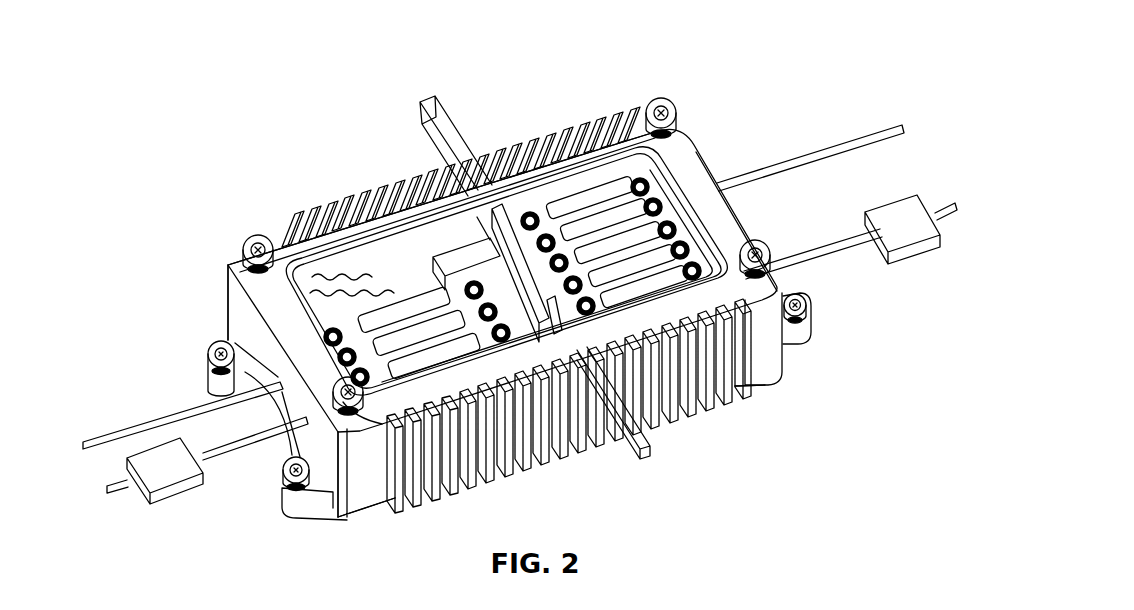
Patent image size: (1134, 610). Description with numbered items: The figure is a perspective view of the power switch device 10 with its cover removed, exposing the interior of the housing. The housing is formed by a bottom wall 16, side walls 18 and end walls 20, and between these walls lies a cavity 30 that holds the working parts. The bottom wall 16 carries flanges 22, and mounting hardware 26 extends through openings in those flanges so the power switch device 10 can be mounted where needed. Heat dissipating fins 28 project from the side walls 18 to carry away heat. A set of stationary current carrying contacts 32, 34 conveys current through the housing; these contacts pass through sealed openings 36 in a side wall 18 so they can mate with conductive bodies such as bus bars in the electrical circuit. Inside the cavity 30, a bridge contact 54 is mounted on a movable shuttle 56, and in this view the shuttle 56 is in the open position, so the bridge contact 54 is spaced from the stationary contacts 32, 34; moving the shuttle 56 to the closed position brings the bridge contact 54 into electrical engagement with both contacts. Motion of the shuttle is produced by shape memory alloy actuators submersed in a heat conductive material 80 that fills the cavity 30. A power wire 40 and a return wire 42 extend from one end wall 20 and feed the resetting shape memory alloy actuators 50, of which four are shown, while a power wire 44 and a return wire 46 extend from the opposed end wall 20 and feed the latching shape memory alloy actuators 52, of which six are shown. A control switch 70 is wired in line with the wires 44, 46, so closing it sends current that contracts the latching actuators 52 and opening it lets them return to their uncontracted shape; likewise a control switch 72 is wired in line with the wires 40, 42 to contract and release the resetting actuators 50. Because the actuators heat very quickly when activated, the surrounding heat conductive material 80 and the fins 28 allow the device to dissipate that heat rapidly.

The power switch device 10 is at (712, 40).
The bottom wall 16 is at (603, 422).
The side walls 18 is at (357, 246).
The end walls 20 is at (731, 233).
The flanges 22 is at (212, 385).
The mounting hardware 26 is at (287, 483).
The heat dissipating fins 28 is at (323, 215).
The cavity 30 is at (393, 260).
The stationary current carrying contact 32 is at (436, 101).
The stationary current carrying contact 34 is at (650, 447).
The openings 36 is at (477, 217).
The power wire 40 is at (248, 453).
The return wire 42 is at (140, 422).
The power wire 44 is at (858, 250).
The return wire 46 is at (860, 130).
The resetting shape memory alloy actuators 50 is at (462, 345).
The latching shape memory alloy actuators 52 is at (661, 206).
The bridge contact 54 is at (520, 300).
The shuttle 56 is at (484, 278).
The control switch 70 is at (897, 193).
The control switch 72 is at (170, 490).
The heat conductive material 80 is at (297, 233).